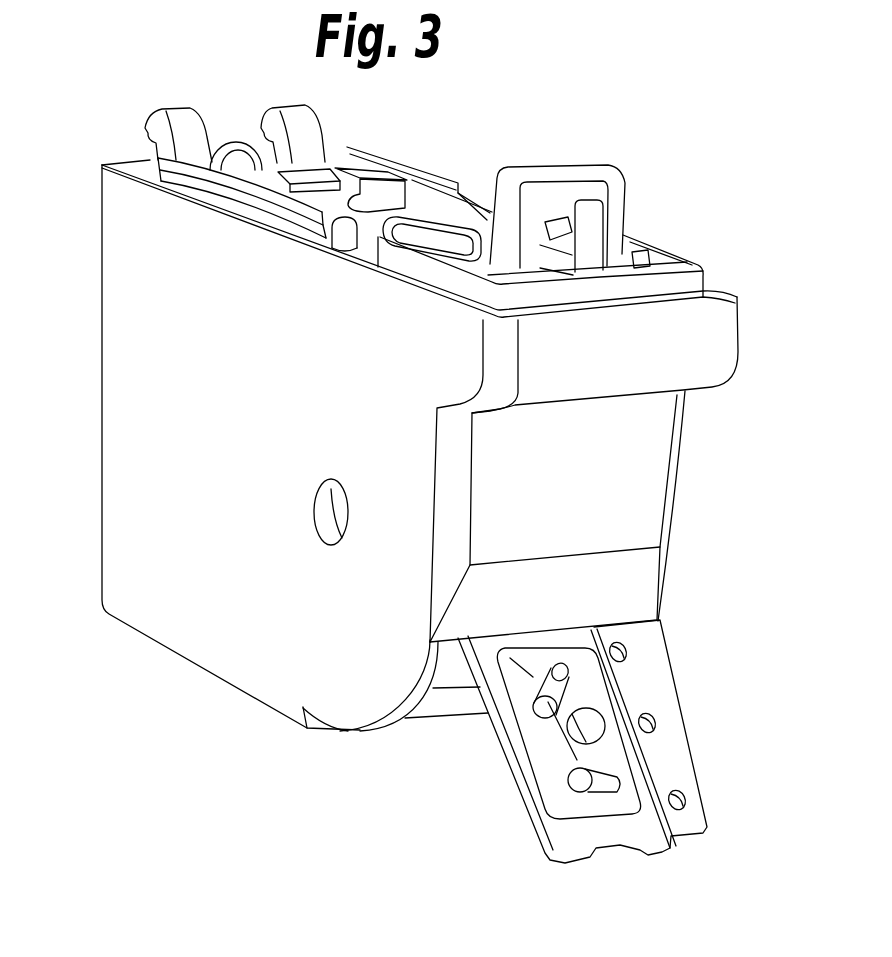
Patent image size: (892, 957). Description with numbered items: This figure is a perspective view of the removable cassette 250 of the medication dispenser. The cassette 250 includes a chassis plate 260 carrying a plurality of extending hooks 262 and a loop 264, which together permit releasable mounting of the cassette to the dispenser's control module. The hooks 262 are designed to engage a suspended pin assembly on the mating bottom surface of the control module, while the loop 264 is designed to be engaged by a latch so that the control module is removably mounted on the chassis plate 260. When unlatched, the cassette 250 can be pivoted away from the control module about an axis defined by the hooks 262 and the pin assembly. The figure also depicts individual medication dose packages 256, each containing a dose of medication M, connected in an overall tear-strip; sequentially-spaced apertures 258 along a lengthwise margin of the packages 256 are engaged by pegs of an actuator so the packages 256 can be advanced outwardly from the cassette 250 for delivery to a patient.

The removable cassette 250 is at (452, 932).
The chassis plate 260 is at (425, 130).
The extending hooks 262 is at (282, 108).
The loop 264 is at (600, 183).
The medication dose packages 256 is at (503, 760).
The apertures 258 is at (658, 720).
The medication M is at (597, 787).